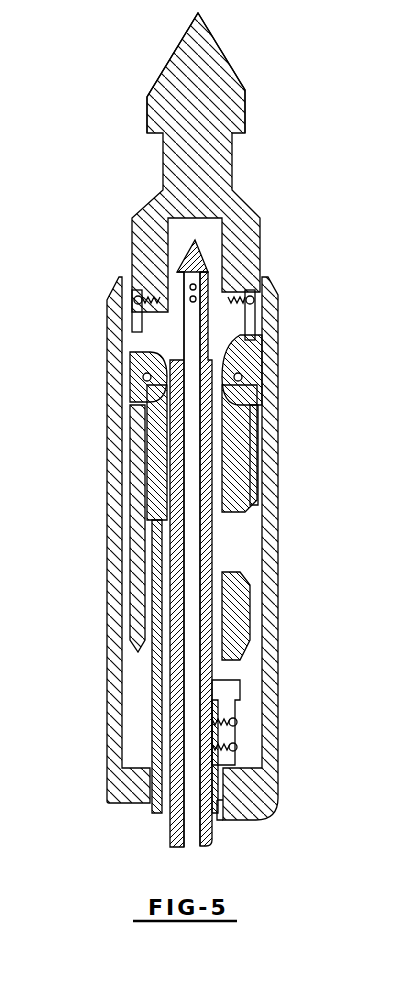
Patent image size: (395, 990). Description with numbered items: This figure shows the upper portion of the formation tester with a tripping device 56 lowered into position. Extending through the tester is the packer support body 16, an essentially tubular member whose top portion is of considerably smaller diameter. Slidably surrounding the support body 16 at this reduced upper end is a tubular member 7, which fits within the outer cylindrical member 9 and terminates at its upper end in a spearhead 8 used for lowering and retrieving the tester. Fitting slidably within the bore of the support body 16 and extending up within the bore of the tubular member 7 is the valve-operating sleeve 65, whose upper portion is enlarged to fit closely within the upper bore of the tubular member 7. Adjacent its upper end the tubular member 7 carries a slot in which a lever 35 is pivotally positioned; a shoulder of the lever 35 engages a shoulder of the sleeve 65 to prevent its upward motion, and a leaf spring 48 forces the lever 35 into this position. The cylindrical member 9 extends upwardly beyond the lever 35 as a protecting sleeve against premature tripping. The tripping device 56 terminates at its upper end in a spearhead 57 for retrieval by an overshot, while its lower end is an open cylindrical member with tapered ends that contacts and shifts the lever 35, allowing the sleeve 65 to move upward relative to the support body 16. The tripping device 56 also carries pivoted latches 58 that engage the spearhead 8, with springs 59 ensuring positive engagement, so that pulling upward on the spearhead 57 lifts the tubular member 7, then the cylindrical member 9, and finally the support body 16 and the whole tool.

The tubular member 7 is at (153, 745).
The spearhead 8 is at (155, 456).
The cylindrical member 9 is at (267, 367).
The packer support body 16 is at (211, 818).
The lever 35 is at (228, 617).
The leaf spring 48 is at (227, 693).
The tripping device 56 is at (247, 232).
The spearhead 57 is at (205, 47).
The latches 58 is at (257, 422).
The springs 59 is at (245, 317).
The valve-operating sleeve 65 is at (175, 351).